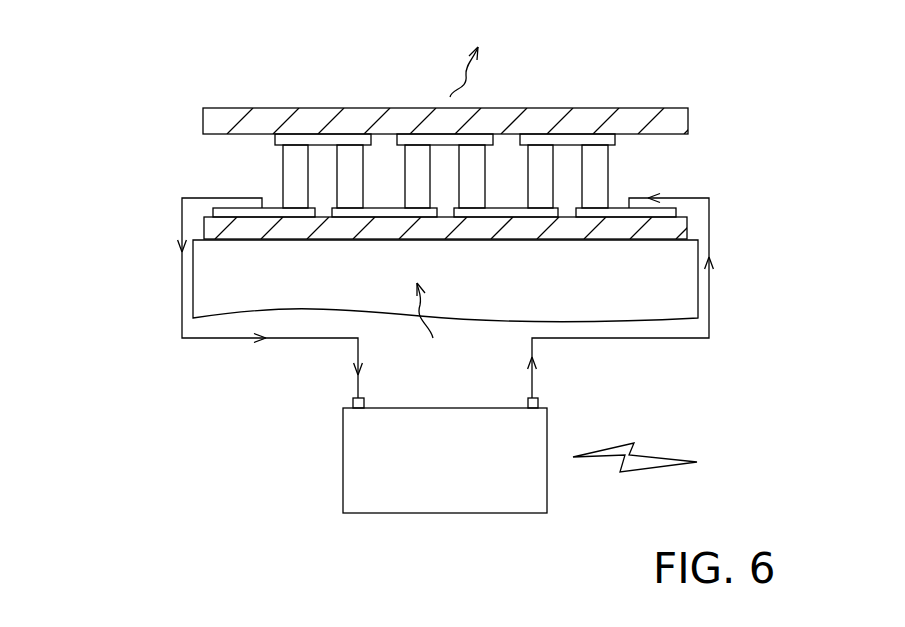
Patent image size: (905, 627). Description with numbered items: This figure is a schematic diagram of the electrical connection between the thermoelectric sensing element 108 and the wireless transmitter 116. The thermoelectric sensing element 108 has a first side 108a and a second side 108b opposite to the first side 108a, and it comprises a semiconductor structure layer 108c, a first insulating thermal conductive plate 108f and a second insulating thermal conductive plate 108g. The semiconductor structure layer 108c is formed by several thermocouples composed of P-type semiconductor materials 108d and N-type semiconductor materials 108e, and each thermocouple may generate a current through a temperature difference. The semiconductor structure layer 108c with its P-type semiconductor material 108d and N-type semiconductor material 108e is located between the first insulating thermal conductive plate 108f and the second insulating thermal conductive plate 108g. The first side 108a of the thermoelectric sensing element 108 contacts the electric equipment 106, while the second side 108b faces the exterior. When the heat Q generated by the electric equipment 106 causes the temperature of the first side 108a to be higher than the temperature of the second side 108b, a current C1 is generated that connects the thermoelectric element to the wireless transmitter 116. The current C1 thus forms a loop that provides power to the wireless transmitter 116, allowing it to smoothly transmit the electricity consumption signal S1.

The thermoelectric sensing element 108 is at (207, 75).
The first side 108a is at (447, 240).
The second side 108b is at (328, 107).
The semiconductor structure layer 108c is at (275, 145).
The P-type semiconductor material 108d is at (283, 178).
The N-type semiconductor material 108e is at (608, 177).
The first insulating thermal conductive plate 108f is at (598, 233).
The second insulating thermal conductive plate 108g is at (636, 113).
The electric equipment 106 is at (630, 312).
The wireless transmitter 116 is at (343, 462).
The current C1 is at (426, 296).
The heat Q is at (452, 195).
The electricity consumption signal S1 is at (655, 470).